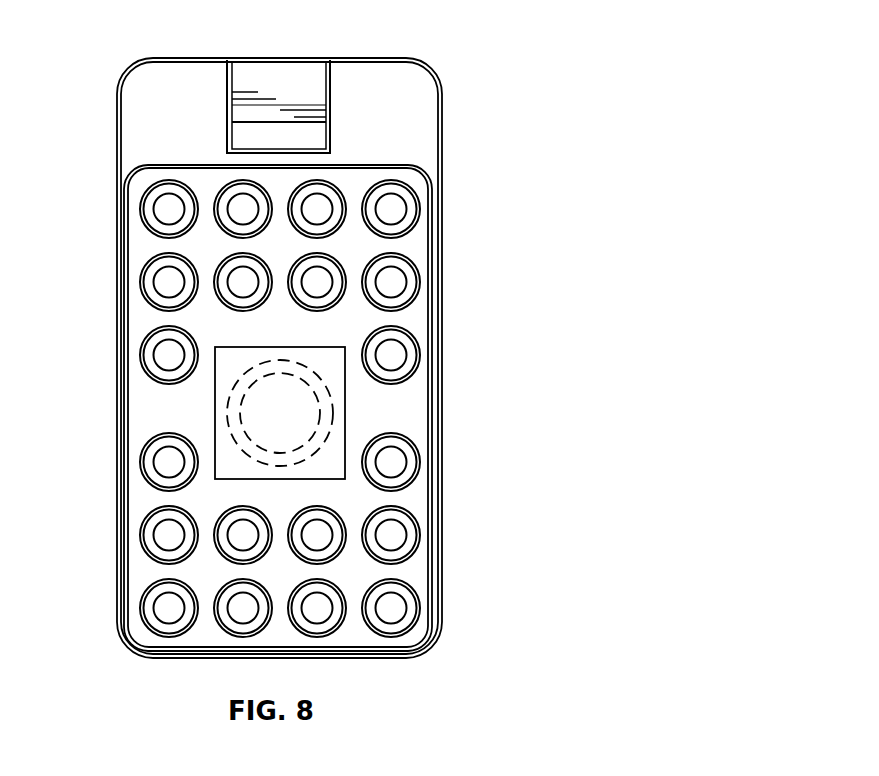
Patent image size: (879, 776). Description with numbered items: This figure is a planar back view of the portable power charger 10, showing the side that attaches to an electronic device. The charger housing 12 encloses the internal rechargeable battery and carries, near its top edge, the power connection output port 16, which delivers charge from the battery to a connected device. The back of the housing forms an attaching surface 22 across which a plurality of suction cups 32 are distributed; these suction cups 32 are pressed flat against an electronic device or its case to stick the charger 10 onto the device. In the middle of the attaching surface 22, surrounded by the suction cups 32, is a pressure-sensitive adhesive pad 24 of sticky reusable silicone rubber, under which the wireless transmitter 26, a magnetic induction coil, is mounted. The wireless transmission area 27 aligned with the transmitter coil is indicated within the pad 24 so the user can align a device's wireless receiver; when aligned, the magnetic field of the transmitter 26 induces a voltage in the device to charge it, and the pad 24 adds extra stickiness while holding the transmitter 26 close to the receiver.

The portable power charger 10 is at (473, 42).
The charger housing 12 is at (130, 66).
The power connection output port 16 is at (290, 72).
The attaching surface 22 is at (422, 234).
The adhesive pad 24 is at (330, 458).
The wireless transmitter 26 is at (230, 428).
The wireless transmission area 27 is at (282, 412).
The suction cups 32 is at (398, 283).